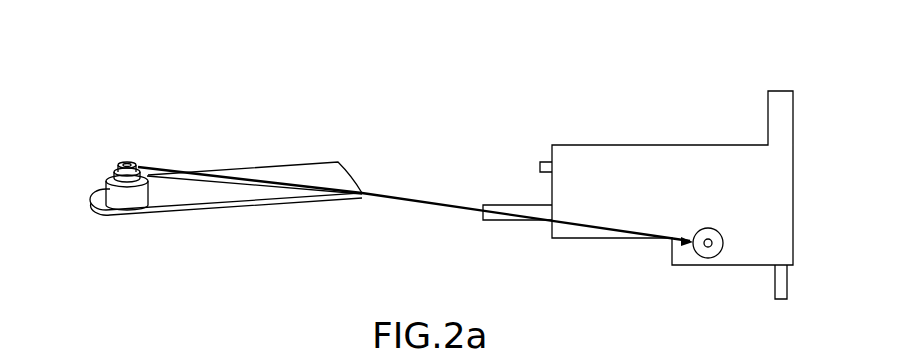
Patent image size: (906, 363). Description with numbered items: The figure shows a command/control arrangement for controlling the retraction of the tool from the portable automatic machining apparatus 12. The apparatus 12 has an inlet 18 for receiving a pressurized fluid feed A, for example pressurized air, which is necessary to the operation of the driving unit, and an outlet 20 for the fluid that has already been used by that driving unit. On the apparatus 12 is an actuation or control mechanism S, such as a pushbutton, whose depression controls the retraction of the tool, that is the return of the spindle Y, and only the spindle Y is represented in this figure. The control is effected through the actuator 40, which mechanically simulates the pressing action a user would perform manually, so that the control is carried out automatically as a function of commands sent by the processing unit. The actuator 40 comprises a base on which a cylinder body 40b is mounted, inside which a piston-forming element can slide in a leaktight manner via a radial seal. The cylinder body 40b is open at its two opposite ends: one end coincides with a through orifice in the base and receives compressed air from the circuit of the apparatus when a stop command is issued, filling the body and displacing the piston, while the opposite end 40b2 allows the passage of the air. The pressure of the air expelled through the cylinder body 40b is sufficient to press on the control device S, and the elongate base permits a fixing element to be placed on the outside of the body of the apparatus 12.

The portable automatic machining apparatus 12 is at (665, 136).
The outlet 20 is at (538, 160).
The inlet 18 is at (544, 199).
The pressurized fluid feed A is at (500, 205).
The actuation or control mechanism S is at (694, 259).
The spindle Y is at (775, 287).
The actuator 40 is at (193, 224).
The cylinder body 40b is at (118, 199).
The opposite end of the cylinder body 40b2 is at (125, 161).